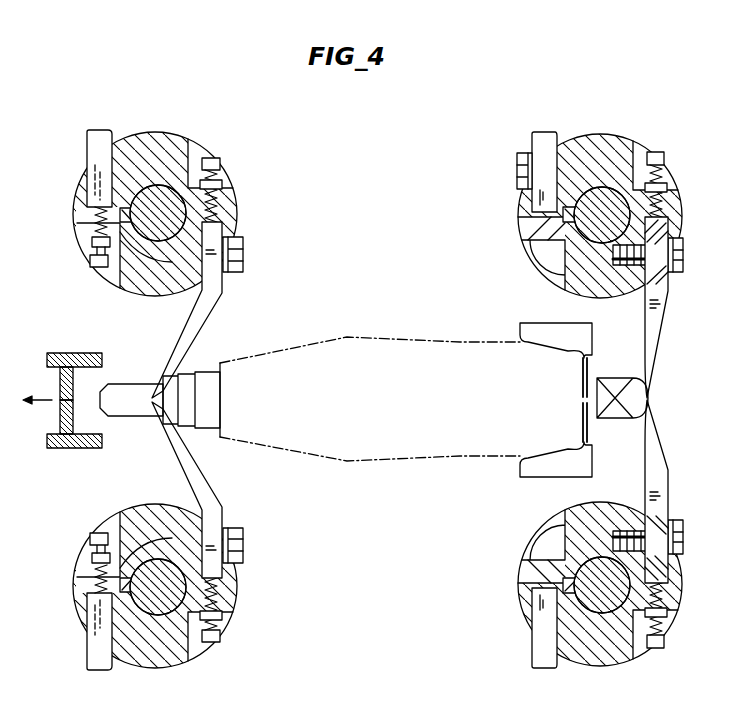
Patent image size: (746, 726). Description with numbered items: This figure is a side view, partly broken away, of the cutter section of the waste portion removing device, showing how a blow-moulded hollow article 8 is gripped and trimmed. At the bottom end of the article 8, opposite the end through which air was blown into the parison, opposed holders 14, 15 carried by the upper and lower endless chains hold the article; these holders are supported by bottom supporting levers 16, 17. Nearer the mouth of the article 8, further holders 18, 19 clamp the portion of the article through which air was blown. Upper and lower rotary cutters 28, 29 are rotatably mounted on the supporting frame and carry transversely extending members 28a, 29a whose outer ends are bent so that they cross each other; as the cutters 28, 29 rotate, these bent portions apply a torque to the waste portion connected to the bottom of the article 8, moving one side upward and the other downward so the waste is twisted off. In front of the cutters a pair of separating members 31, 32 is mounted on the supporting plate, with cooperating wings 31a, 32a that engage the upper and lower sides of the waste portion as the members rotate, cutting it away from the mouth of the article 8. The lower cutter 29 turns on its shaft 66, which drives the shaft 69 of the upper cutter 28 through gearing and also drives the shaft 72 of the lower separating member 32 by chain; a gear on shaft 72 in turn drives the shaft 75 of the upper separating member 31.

The hollow article 8 is at (374, 345).
The holder 14 is at (530, 330).
The holder 15 is at (535, 472).
The bottom supporting lever 16 is at (590, 372).
The bottom supporting lever 17 is at (588, 426).
The holder 18 is at (72, 352).
The holder 19 is at (65, 449).
The upper rotary cutter 28 is at (598, 142).
The transversely extending member 28a is at (652, 330).
The lower rotary cutter 29 is at (608, 652).
The transversely extending member 29a is at (660, 470).
The separating member 31 is at (178, 147).
The wing 31a is at (223, 281).
The separating member 32 is at (182, 650).
The wing 32a is at (222, 503).
The shaft of the lower cutter 66 is at (548, 537).
The shaft of the upper cutter 69 is at (572, 238).
The shaft of the lower separating member 72 is at (157, 603).
The shaft of the upper separating member 75 is at (160, 238).